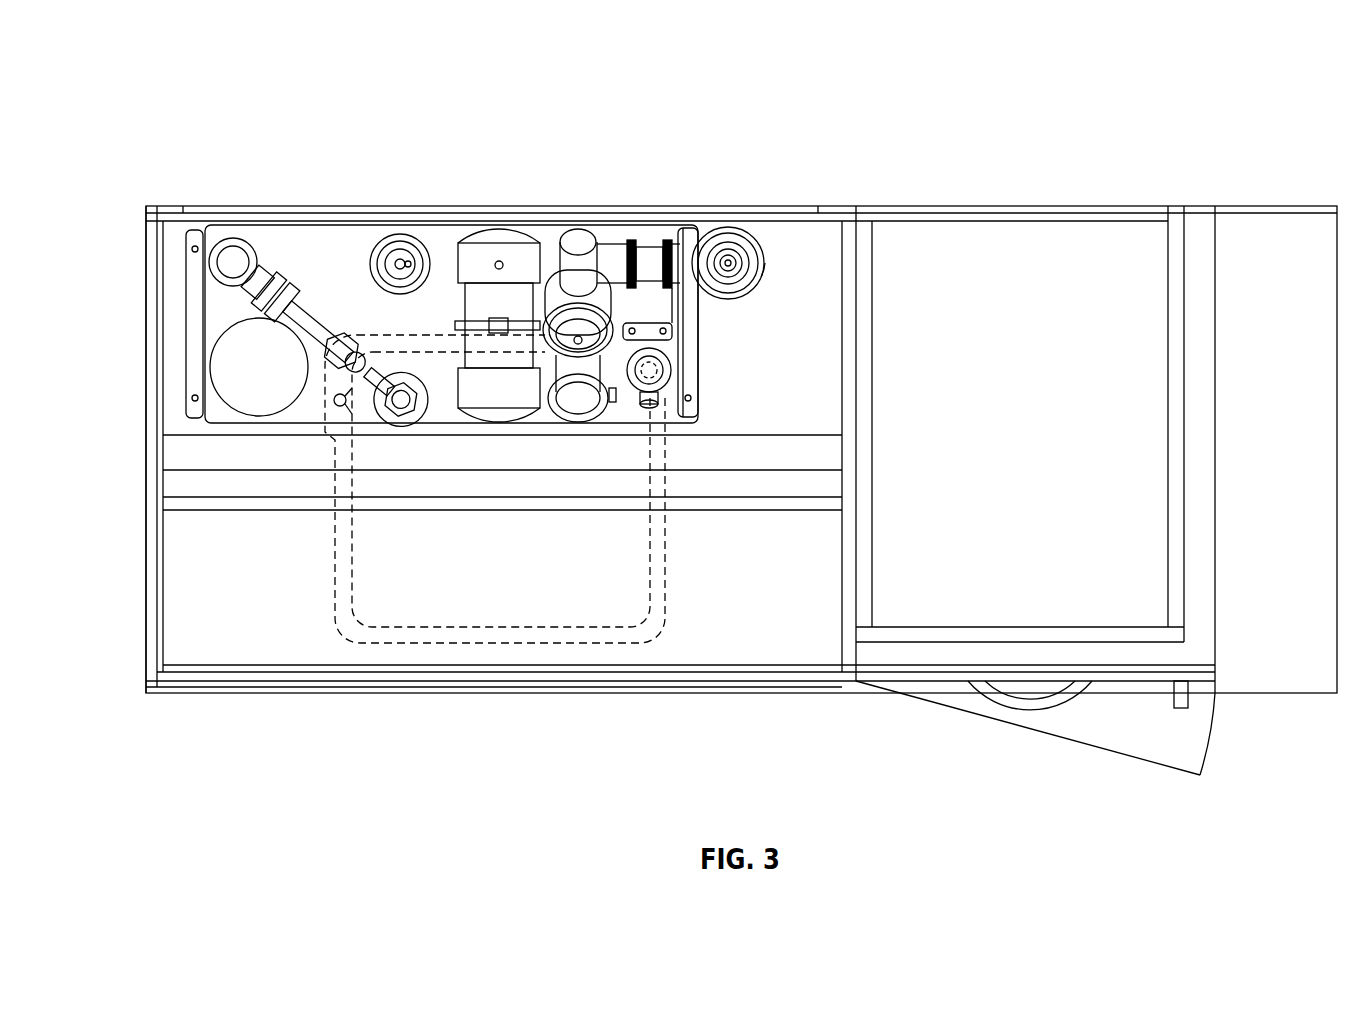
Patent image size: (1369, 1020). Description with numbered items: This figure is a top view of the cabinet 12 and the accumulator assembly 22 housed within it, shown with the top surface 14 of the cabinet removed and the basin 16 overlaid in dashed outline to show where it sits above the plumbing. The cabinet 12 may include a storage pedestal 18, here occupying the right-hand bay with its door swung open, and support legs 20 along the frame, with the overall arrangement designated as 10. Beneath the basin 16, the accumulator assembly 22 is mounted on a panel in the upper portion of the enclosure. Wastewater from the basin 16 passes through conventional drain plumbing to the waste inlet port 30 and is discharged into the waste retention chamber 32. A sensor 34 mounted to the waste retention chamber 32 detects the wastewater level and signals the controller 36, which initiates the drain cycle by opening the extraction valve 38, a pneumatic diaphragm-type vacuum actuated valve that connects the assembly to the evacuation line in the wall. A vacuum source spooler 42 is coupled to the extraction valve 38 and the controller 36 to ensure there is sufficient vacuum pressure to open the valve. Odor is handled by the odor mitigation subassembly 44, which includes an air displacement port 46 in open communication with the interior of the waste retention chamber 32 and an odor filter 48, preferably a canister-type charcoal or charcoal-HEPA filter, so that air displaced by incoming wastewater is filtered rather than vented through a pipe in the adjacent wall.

The fluid system 10 is at (1286, 102).
The cabinet 12 is at (144, 656).
The top surface 14 is at (247, 627).
The basin 16 is at (352, 560).
The storage pedestal 18 is at (1150, 330).
The support legs 20 is at (147, 553).
The accumulator assembly 22 is at (199, 338).
The waste inlet port 30 is at (233, 256).
The waste retention chamber 32 is at (208, 303).
The sensor 34 is at (401, 236).
The controller 36 is at (672, 378).
The extraction valve 38 is at (578, 240).
The vacuum source spooler 42 is at (500, 232).
The odor mitigation subassembly 44 is at (773, 275).
The air displacement port 46 is at (650, 262).
The odor filter 48 is at (730, 258).